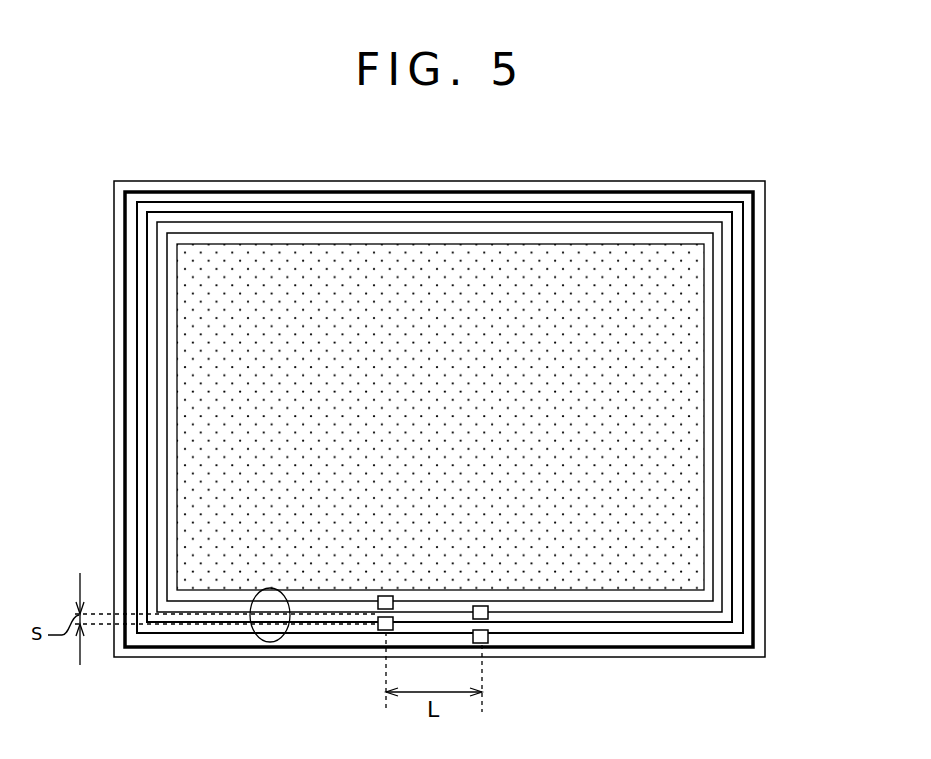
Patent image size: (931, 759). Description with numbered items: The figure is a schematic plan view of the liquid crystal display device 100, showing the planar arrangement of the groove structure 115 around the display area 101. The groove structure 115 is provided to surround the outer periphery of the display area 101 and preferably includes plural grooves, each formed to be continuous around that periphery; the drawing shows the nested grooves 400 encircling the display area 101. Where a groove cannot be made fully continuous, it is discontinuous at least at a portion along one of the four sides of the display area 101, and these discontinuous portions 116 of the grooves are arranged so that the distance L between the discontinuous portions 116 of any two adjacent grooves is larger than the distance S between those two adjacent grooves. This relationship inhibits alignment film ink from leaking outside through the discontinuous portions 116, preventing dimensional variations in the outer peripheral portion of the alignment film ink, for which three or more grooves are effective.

The liquid crystal display device 100 is at (155, 148).
The display area 101 is at (663, 372).
The coil conductor (antenna coil) 400 is at (126, 405).
The groove structure 115 is at (258, 638).
The discontinuous portions 116 is at (481, 606).